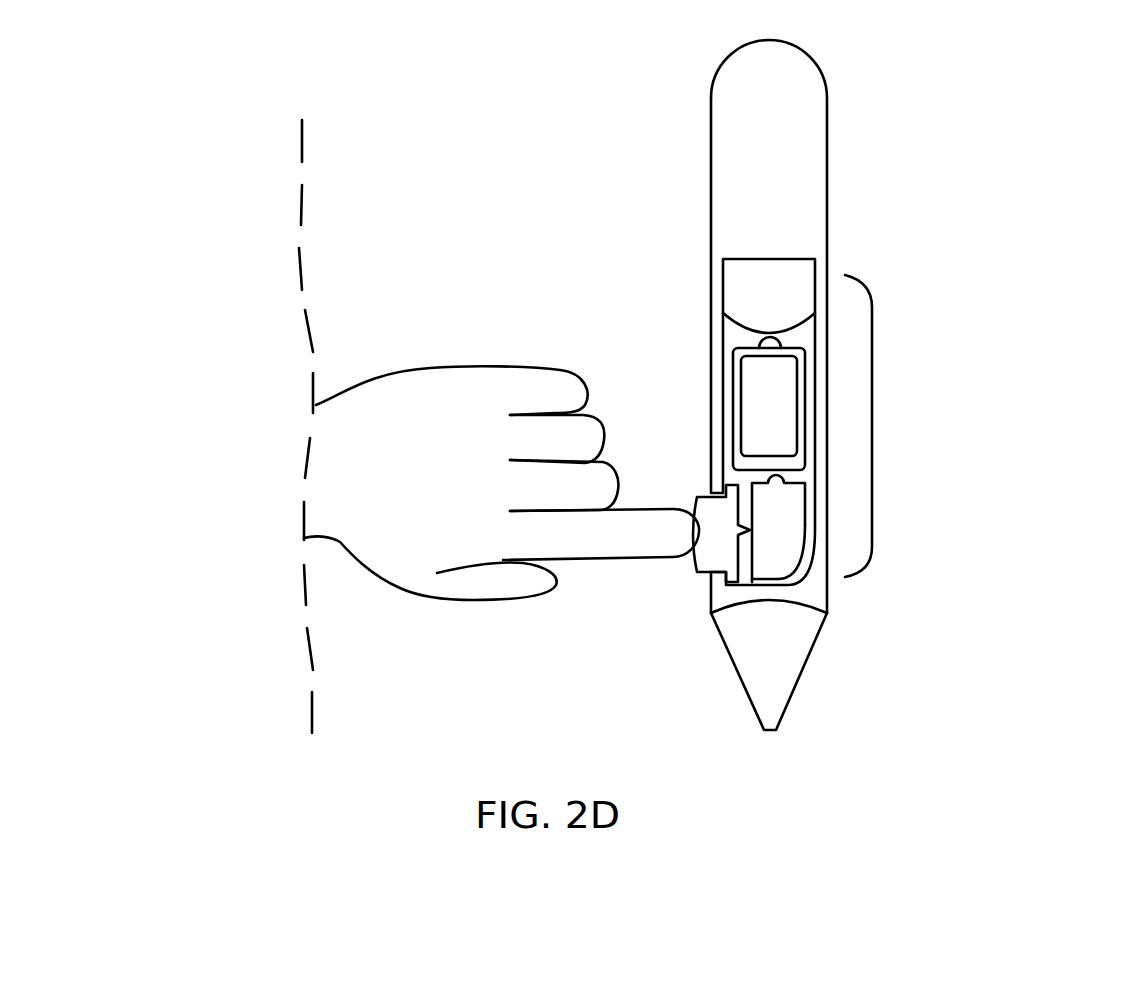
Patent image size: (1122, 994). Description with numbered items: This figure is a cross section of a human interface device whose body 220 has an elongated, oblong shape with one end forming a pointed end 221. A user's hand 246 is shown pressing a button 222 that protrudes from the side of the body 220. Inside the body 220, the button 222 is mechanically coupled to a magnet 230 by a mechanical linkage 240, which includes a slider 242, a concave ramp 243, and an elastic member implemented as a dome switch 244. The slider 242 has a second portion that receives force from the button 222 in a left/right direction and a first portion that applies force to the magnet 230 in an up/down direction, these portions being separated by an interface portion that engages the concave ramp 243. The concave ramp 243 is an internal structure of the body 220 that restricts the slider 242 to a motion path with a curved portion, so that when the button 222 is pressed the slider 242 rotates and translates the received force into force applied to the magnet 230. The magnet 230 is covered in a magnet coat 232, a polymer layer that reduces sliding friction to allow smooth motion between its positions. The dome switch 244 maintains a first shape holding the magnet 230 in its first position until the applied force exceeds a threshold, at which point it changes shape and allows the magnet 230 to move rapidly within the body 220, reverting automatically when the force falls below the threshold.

The body 220 is at (745, 115).
The pointed end 221 is at (809, 727).
The button 222 is at (708, 557).
The magnet 230 is at (759, 370).
The magnet coat 232 is at (722, 426).
The mechanical linkage 240 is at (872, 426).
The slider 242 is at (793, 560).
The concave ramp 243 is at (824, 579).
The dome switch 244 is at (734, 286).
The hand 246 is at (400, 395).